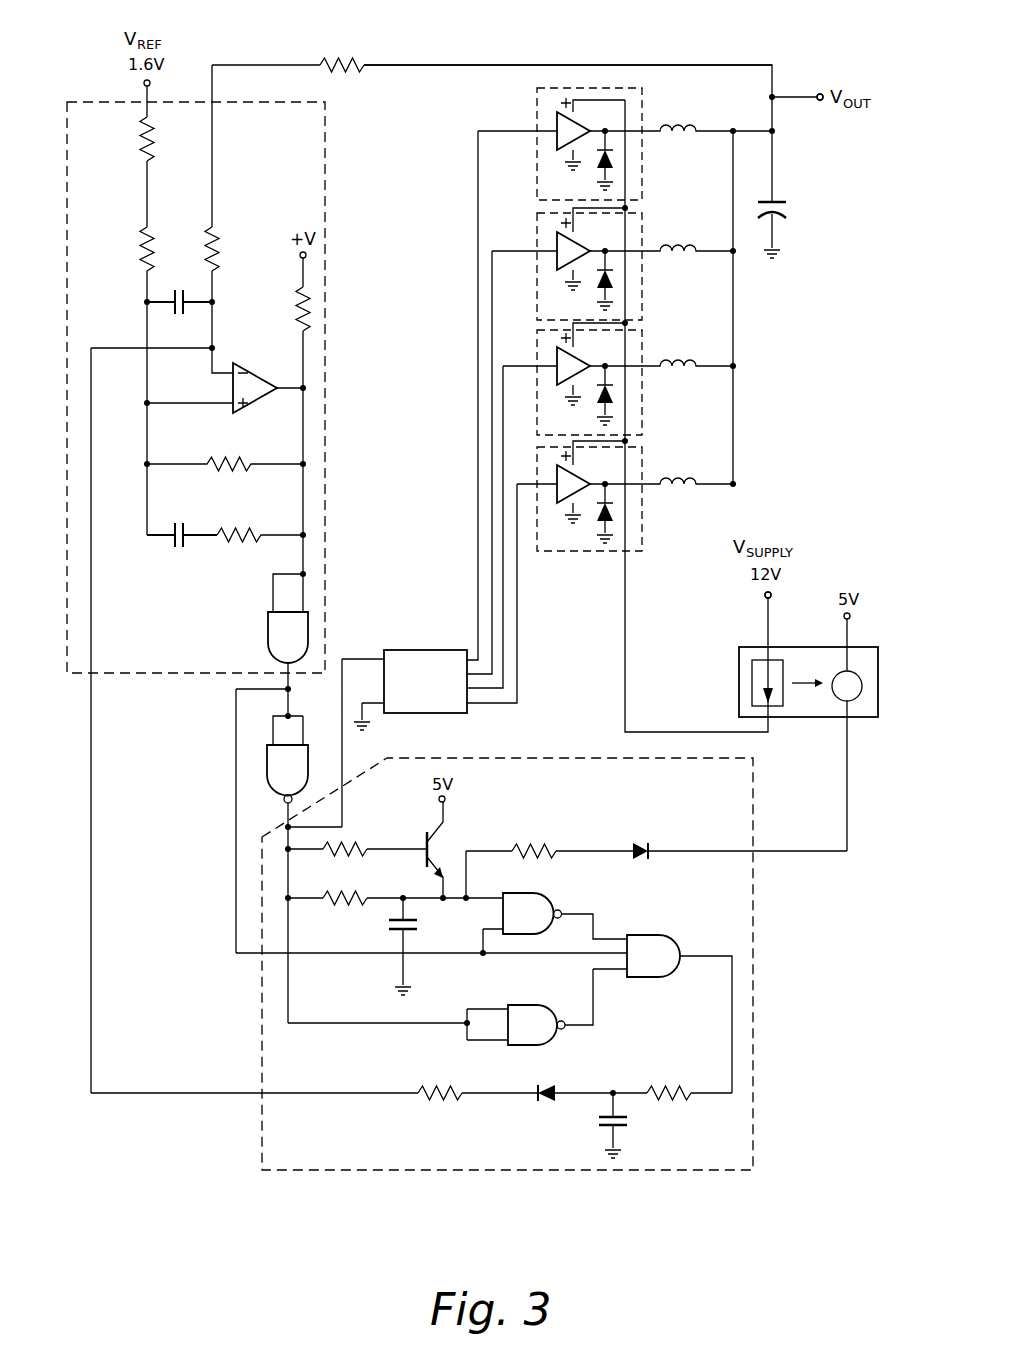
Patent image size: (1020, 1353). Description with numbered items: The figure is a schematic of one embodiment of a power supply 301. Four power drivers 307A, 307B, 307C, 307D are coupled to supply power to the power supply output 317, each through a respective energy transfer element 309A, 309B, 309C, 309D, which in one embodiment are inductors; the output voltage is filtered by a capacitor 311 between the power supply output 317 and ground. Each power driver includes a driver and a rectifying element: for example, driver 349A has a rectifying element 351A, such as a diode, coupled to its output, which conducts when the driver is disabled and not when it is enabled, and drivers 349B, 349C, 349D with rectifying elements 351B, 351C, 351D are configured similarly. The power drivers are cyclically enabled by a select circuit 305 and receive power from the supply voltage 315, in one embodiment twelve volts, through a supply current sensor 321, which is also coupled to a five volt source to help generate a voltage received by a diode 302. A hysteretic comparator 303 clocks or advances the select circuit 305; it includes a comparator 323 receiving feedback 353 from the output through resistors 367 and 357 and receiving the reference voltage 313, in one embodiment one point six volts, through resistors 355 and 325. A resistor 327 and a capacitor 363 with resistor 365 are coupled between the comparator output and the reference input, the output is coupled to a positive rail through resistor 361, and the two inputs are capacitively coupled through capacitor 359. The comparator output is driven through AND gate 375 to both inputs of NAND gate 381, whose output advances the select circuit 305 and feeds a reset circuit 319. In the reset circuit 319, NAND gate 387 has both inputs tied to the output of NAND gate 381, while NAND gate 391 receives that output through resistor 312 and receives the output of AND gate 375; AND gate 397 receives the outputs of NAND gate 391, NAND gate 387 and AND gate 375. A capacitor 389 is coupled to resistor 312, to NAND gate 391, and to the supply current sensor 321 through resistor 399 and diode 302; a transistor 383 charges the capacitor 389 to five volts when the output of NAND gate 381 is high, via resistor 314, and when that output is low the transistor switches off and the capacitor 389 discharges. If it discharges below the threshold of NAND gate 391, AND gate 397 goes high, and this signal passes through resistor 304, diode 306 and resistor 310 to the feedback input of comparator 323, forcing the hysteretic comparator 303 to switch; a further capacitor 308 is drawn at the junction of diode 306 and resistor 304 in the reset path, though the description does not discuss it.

The power supply 301 is at (788, 45).
The hysteretic comparator 303 is at (326, 186).
The select circuit 305 is at (412, 650).
The power driver 307A is at (643, 152).
The power driver 307B is at (643, 274).
The power driver 307C is at (643, 386).
The power driver 307D is at (643, 504).
The energy transfer element 309A is at (677, 122).
The energy transfer element 309B is at (677, 242).
The energy transfer element 309C is at (677, 357).
The energy transfer element 309D is at (677, 475).
The capacitor 311 is at (790, 214).
The reference voltage 313 is at (145, 83).
The supply voltage 315 is at (767, 615).
The power supply output 317 is at (822, 108).
The reset circuit 319 is at (753, 1062).
The supply current sensor 321 is at (739, 688).
The comparator 323 is at (233, 410).
The resistor 325 is at (142, 252).
The resistor 327 is at (230, 458).
The driver 349A is at (553, 120).
The driver 349B is at (553, 240).
The driver 349C is at (553, 353).
The driver 349D is at (553, 472).
The rectifying element 351A is at (598, 172).
The rectifying element 351B is at (598, 292).
The rectifying element 351C is at (598, 408).
The rectifying element 351D is at (600, 535).
The feedback 353 is at (620, 65).
The resistor 355 is at (140, 142).
The resistor 357 is at (214, 247).
The capacitor 359 is at (176, 290).
The resistor 361 is at (300, 318).
The capacitor 363 is at (172, 548).
The resistor 365 is at (235, 530).
The resistor 367 is at (340, 58).
The AND gate 375 is at (268, 640).
The NAND gate 381 is at (267, 775).
The transistor 383 is at (445, 832).
The NAND gate 387 is at (545, 1042).
The capacitor 389 is at (393, 932).
The NAND gate 391 is at (540, 893).
The AND gate 397 is at (665, 935).
The resistor 399 is at (535, 845).
The diode 302 is at (641, 845).
The resistor 304 is at (672, 1090).
The diode 306 is at (540, 1102).
The capacitor 308 is at (626, 1125).
The resistor 310 is at (437, 1100).
The resistor 312 is at (356, 900).
The resistor 314 is at (352, 845).